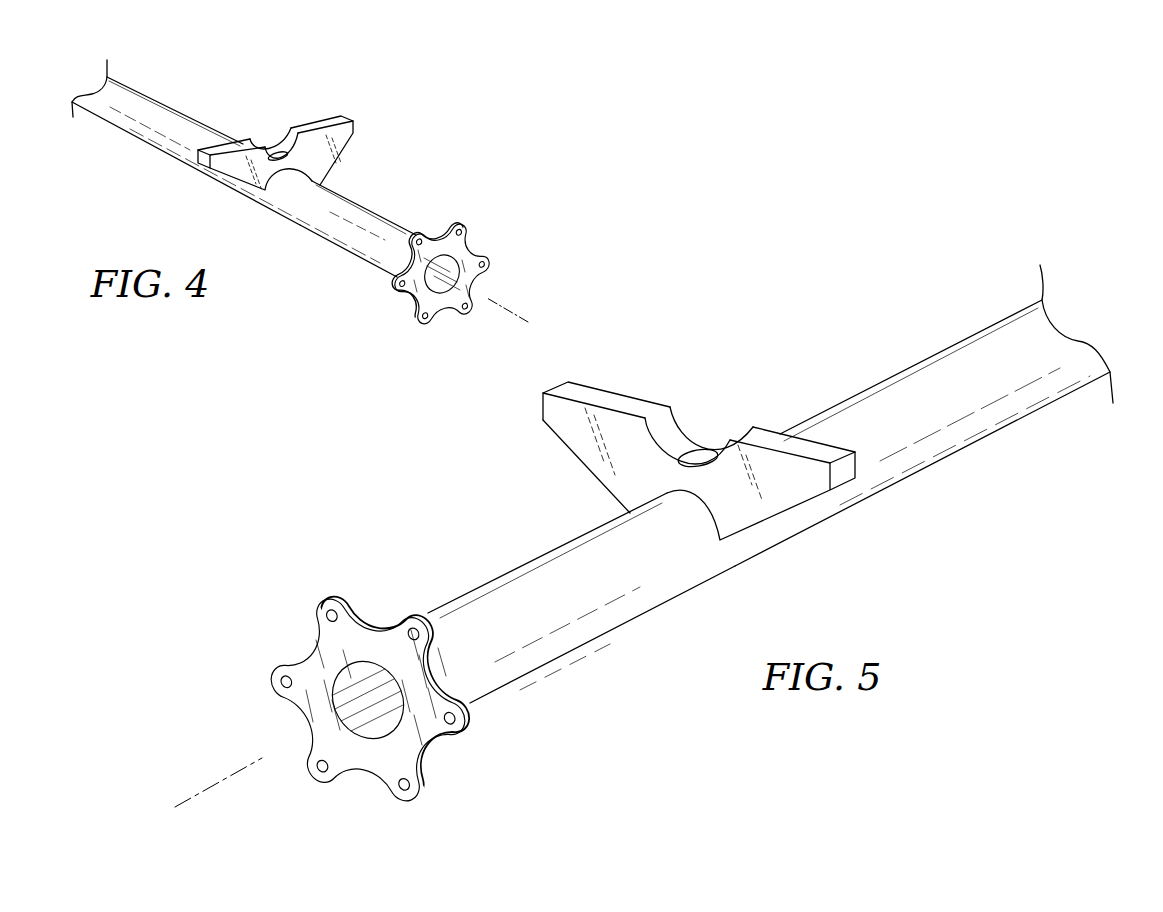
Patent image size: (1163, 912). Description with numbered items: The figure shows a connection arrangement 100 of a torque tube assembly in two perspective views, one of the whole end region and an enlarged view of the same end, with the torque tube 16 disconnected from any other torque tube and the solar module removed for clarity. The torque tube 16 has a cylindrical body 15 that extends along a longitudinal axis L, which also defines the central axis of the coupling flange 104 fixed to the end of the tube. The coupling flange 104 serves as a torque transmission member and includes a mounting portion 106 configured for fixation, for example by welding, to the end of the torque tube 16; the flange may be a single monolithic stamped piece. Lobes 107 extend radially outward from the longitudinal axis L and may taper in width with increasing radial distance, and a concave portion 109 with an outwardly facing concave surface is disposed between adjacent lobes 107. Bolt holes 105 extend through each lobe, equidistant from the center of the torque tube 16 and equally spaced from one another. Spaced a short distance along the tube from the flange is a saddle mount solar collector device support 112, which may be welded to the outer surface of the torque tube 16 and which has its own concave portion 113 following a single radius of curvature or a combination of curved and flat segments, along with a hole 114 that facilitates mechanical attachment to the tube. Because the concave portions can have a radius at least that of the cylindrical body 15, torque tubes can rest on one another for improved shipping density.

In FIG. 5, the connection arrangement 100 is at (392, 470).
In FIG. 4, the connection arrangement 100 is at (463, 100).
In FIG. 5, the cylindrical body 15 is at (553, 583).
In FIG. 4, the cylindrical body 15 is at (343, 210).
In FIG. 5, the torque tube 16 is at (988, 442).
In FIG. 4, the torque tube 16 is at (147, 157).
In FIG. 5, the coupling flange 104 is at (382, 677).
In FIG. 4, the coupling flange 104 is at (464, 262).
In FIG. 5, the bolt holes 105 is at (402, 788).
In FIG. 4, the bolt holes 105 is at (425, 322).
In FIG. 5, the mounting portion 106 is at (302, 690).
In FIG. 4, the mounting portion 106 is at (443, 303).
In FIG. 5, the lobes 107 is at (338, 597).
In FIG. 4, the lobes 107 is at (458, 223).
In FIG. 5, the concave portion 109 is at (378, 623).
In FIG. 4, the concave portion 109 is at (442, 223).
In FIG. 5, the saddle mount solar collector device support 112 is at (699, 438).
In FIG. 4, the saddle mount solar collector device support 112 is at (283, 130).
In FIG. 5, the concave portion 113 is at (667, 417).
In FIG. 4, the concave portion 113 is at (290, 128).
In FIG. 5, the hole 114 is at (697, 458).
In FIG. 4, the hole 114 is at (277, 155).
In FIG. 5, the longitudinal axis L is at (203, 785).
In FIG. 4, the longitudinal axis L is at (509, 307).